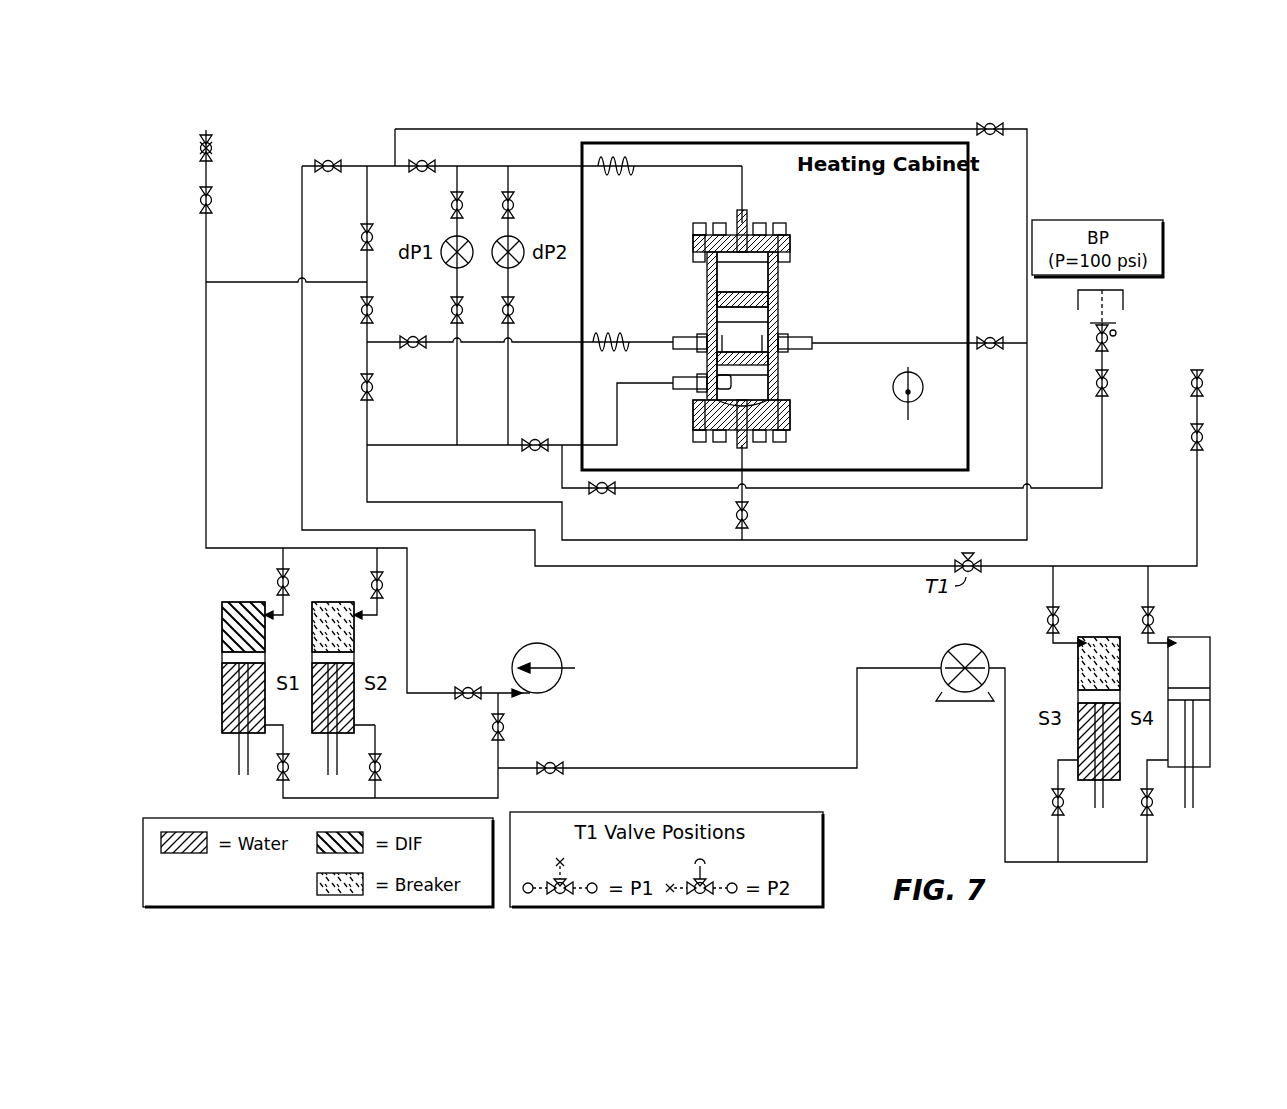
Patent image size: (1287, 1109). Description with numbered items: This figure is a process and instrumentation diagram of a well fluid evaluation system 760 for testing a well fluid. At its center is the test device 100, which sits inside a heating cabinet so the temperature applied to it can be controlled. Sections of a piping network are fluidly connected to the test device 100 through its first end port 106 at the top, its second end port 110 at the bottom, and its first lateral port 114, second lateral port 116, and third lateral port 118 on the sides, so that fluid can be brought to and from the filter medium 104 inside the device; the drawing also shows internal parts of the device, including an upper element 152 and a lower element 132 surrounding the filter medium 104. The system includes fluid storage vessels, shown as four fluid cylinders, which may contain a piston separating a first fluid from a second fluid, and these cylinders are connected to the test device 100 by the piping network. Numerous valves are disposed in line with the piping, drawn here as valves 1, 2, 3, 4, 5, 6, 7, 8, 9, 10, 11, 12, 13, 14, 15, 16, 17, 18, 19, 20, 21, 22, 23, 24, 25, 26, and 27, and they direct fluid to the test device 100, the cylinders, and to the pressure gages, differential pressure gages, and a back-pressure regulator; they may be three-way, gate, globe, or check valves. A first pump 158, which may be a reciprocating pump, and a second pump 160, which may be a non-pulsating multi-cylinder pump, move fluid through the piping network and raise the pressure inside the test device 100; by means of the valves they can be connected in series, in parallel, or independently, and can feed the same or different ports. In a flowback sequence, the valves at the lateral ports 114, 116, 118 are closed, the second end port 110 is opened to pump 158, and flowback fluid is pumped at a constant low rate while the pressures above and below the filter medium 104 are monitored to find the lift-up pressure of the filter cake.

The well fluid evaluation system 760 is at (1155, 190).
The test device 100 is at (812, 226).
The first end port 106 is at (750, 215).
The piston 152 is at (775, 300).
The filter medium 104 is at (775, 369).
The first lateral port 114 is at (700, 336).
The second lateral port 116 is at (785, 336).
The third lateral port 118 is at (700, 376).
The lower spacer 132 is at (775, 405).
The second end port 110 is at (735, 448).
The valve 1 is at (289, 768).
The valve 2 is at (277, 583).
The valve 3 is at (381, 768).
The valve 4 is at (371, 584).
The valve 5 is at (200, 200).
The valve 6 is at (200, 143).
The valve 7 is at (330, 160).
The valve 8 is at (361, 242).
The valve 9 is at (361, 313).
The valve 10 is at (361, 388).
The valve 11 is at (424, 160).
The valve 12 is at (413, 350).
The valve 13 is at (530, 452).
The valve 14 is at (466, 684).
The valve 15 is at (604, 497).
The valve 16 is at (736, 515).
The valve 17 is at (990, 138).
The valve 18 is at (990, 334).
The valve 19 is at (1047, 621).
The valve 20 is at (1065, 803).
The valve 21 is at (1142, 620).
The valve 22 is at (1153, 803).
The valve 23 is at (1108, 383).
The valve 24 is at (1203, 437).
The valve 25 is at (1203, 383).
The valve 26 is at (552, 760).
The valve 27 is at (492, 727).
The first pump 158 is at (535, 644).
The second pump 160 is at (963, 644).